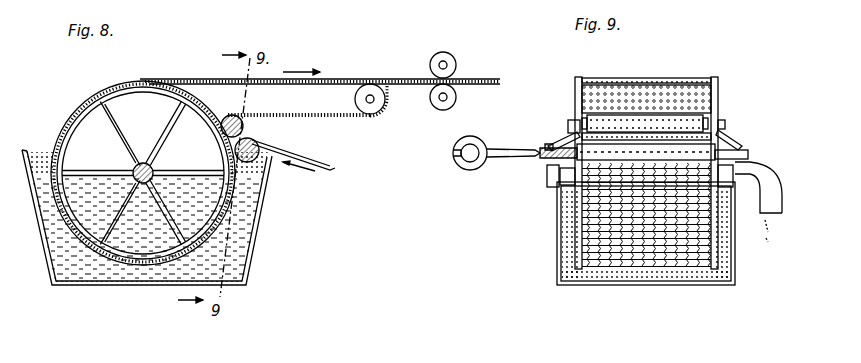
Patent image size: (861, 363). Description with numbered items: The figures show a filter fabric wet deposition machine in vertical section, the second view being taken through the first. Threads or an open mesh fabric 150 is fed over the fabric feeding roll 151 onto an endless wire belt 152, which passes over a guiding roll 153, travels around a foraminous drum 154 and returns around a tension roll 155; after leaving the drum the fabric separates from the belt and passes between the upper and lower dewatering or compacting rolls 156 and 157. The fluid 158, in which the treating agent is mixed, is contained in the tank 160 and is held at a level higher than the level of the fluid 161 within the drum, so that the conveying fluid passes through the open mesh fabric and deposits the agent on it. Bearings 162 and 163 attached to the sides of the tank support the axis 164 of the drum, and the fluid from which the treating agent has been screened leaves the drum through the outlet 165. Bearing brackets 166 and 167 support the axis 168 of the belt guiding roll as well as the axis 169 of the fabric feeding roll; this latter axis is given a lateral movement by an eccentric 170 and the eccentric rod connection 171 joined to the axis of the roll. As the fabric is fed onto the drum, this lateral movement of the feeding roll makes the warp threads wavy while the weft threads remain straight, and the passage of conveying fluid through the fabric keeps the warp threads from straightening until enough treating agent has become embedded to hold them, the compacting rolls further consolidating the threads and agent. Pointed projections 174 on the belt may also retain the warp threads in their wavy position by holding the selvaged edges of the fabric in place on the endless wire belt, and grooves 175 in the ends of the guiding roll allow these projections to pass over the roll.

In FIG. 8, the open mesh fabric 150 is at (336, 168).
In FIG. 8, the roll 151 is at (262, 147).
In FIG. 8, the endless wire belt 152 is at (354, 101).
In FIG. 8, the guiding roll 153 is at (244, 127).
In FIG. 8, the foraminous drum 154 is at (140, 252).
In FIG. 8, the tension roll 155 is at (370, 92).
In FIG. 8, the upper dewatering or compacting roll 156 is at (456, 65).
In FIG. 8, the lower dewatering or compacting roll 157 is at (456, 97).
In FIG. 8, the fluid 158 is at (45, 150).
In FIG. 8, the tank 160 is at (172, 285).
In FIG. 8, the fluid within the drum 161 is at (70, 172).
In FIG. 9, the bearing 162 is at (553, 193).
In FIG. 9, the bearing 163 is at (745, 188).
In FIG. 9, the axis of the drum 164 is at (545, 176).
In FIG. 9, the outlet 165 is at (775, 203).
In FIG. 9, the bearing bracket 166 is at (548, 142).
In FIG. 9, the bearing bracket 167 is at (744, 145).
In FIG. 9, the axis of the belt guiding roll 168 is at (568, 126).
In FIG. 9, the axis of the fabric feeding roll 169 is at (750, 155).
In FIG. 9, the eccentric 170 is at (460, 167).
In FIG. 9, the eccentric rod connection 171 is at (502, 160).
In FIG. 8, the pointed projections 174 is at (335, 116).
In FIG. 9, the grooves 175 is at (722, 121).